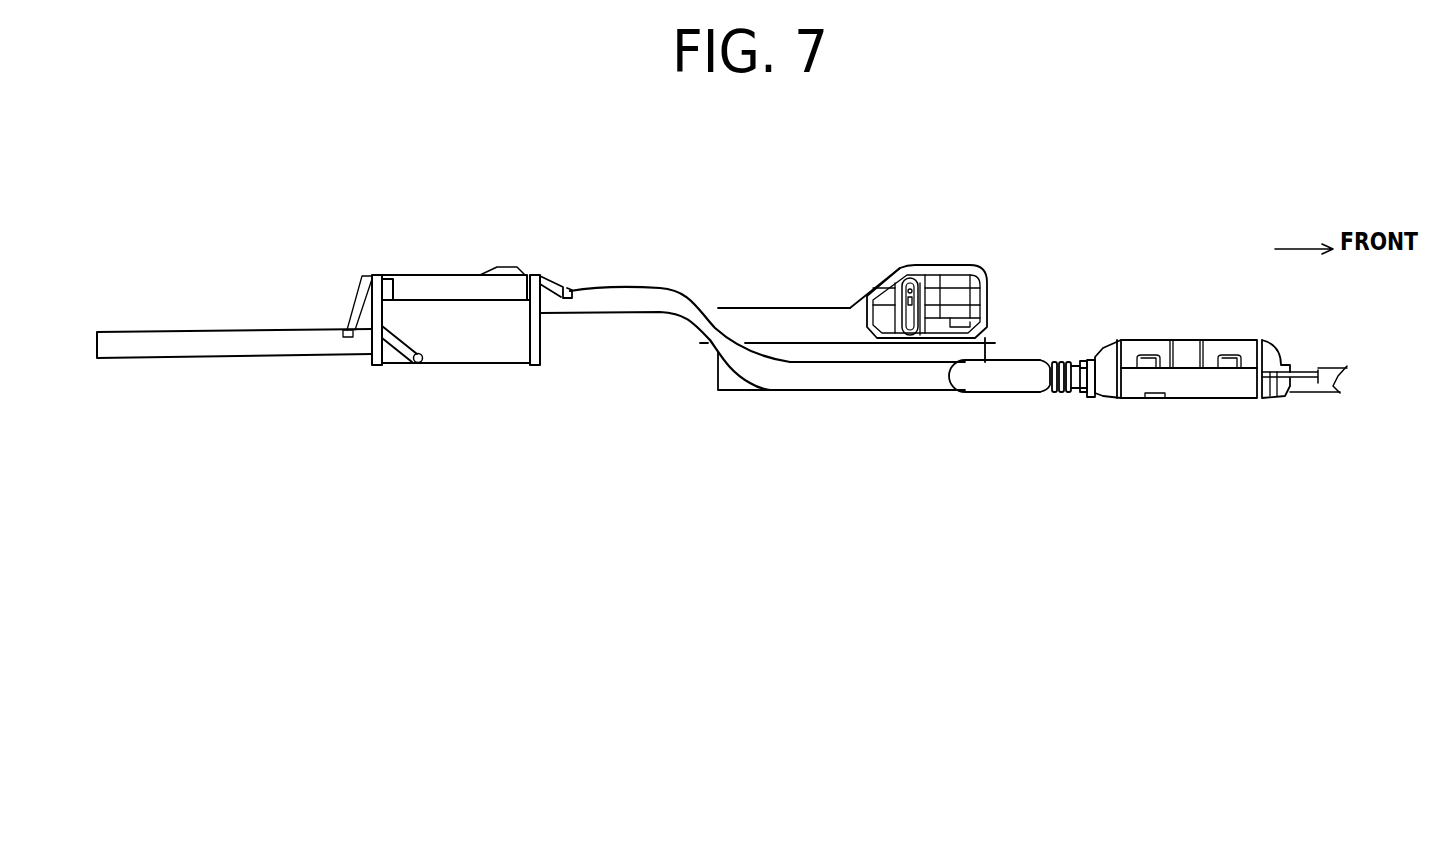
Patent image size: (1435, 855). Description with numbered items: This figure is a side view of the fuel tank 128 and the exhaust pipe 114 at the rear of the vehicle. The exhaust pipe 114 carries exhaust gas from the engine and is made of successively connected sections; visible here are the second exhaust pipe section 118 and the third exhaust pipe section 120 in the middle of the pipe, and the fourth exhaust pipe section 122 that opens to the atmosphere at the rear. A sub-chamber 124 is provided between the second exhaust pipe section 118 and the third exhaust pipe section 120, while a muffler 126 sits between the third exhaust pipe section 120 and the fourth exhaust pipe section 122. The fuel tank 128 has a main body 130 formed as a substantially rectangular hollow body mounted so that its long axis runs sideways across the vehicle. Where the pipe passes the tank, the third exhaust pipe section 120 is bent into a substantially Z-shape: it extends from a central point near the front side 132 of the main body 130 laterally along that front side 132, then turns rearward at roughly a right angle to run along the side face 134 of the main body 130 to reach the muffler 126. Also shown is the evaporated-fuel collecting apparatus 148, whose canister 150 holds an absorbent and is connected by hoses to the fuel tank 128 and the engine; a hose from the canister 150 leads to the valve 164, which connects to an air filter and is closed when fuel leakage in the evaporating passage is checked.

The exhaust pipe 114 is at (593, 278).
The second exhaust pipe section 118 is at (1308, 392).
The third exhaust pipe section 120 is at (640, 303).
The fourth exhaust pipe section 122 is at (285, 356).
The sub-chamber 124 is at (1183, 343).
The muffler 126 is at (490, 352).
The fuel tank 128 is at (756, 298).
The main body 130 is at (832, 310).
The front side 132 is at (1000, 323).
The side face 134 is at (793, 338).
The evaporated-fuel collecting apparatus 148 is at (996, 262).
The canister 150 is at (945, 284).
The valve 164 is at (920, 322).